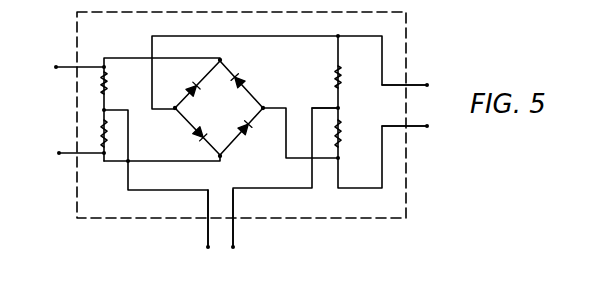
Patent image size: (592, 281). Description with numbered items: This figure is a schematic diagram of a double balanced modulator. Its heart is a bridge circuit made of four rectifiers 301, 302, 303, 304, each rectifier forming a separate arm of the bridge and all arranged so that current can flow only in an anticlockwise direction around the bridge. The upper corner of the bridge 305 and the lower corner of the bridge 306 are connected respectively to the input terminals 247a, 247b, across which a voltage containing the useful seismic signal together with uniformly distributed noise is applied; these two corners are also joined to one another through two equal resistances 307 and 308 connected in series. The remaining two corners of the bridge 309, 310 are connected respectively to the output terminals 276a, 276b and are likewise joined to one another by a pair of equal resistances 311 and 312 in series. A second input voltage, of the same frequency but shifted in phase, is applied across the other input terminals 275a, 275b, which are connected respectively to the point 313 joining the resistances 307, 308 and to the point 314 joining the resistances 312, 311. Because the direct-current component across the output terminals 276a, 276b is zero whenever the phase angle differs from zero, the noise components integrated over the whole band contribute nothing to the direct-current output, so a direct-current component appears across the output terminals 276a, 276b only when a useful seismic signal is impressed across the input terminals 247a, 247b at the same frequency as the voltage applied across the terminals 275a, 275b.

The input terminal 247a is at (63, 51).
The input terminal 247b is at (63, 171).
The resistance 307 is at (124, 83).
The resistance 308 is at (70, 133).
The connecting point 313 is at (121, 174).
The rectifier 302 is at (180, 80).
The rectifier 301 is at (263, 73).
The rectifier 303 is at (181, 143).
The rectifier 304 is at (256, 139).
The upper corner of the bridge 305 is at (244, 50).
The corner of the bridge 309 is at (158, 122).
The corner of the bridge 310 is at (288, 96).
The lower corner of the bridge 306 is at (242, 166).
The resistance 311 is at (357, 77).
The resistance 312 is at (356, 133).
The connecting point 314 is at (351, 110).
The output terminal 276a is at (417, 65).
The output terminal 276b is at (417, 146).
The input terminal 275a is at (169, 223).
The input terminal 275b is at (267, 223).